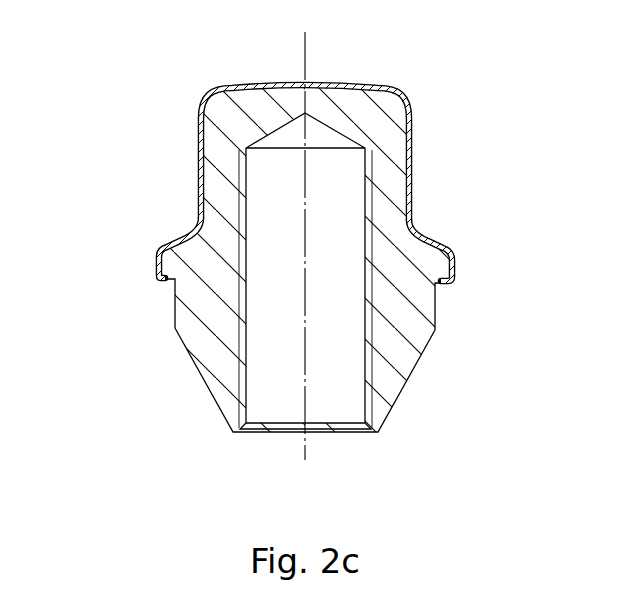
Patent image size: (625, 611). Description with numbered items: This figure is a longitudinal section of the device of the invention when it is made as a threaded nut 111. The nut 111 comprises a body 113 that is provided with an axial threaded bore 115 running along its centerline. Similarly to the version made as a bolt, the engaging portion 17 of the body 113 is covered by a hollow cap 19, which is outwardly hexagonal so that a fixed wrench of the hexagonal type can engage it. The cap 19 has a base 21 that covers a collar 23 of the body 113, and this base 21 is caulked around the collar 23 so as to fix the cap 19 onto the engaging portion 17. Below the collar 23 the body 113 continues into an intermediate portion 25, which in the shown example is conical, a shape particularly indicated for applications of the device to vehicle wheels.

The threaded nut 111 is at (133, 457).
The engaging portion 17 is at (380, 133).
The cap 19 is at (186, 181).
The base 21 is at (455, 262).
The collar 23 is at (172, 263).
The intermediate portion 25 is at (410, 343).
The body 113 is at (449, 299).
The axial threaded bore 115 is at (245, 393).